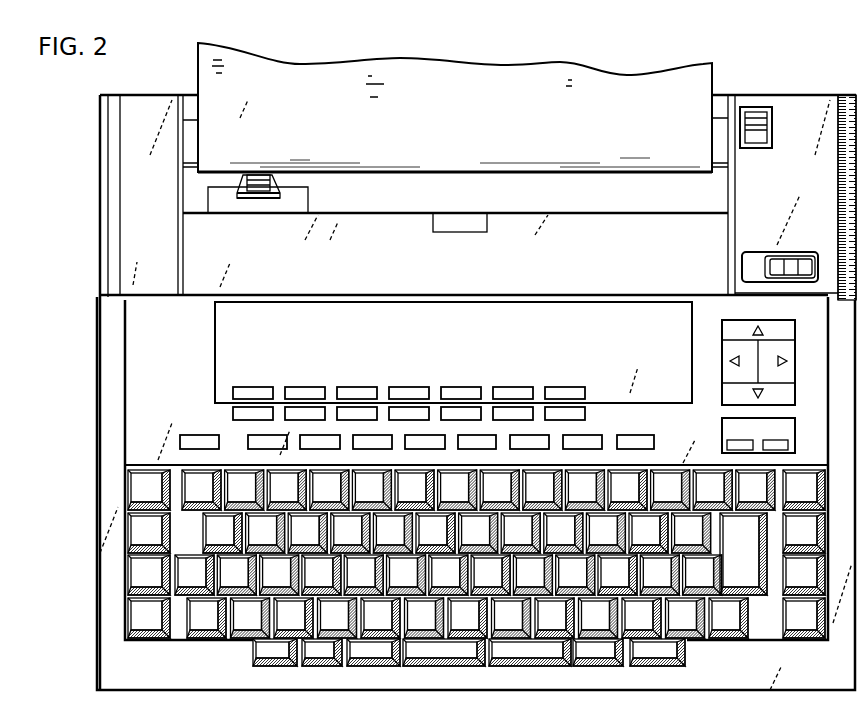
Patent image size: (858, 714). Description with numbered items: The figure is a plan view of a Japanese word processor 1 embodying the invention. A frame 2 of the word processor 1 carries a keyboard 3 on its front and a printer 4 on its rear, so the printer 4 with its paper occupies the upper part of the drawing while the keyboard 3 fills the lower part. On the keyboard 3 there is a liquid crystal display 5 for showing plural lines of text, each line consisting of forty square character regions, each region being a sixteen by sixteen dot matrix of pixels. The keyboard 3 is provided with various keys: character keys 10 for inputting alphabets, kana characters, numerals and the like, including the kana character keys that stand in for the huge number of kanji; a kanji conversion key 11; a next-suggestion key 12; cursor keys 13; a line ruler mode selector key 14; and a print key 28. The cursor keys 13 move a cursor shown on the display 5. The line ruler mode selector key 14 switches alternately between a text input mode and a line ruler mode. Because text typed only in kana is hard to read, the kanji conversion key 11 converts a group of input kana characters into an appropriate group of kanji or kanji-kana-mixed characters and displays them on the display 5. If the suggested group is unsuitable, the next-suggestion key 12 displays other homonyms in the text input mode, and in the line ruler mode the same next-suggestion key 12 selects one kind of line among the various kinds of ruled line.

The word processor 1 is at (88, 319).
The frame 2 is at (103, 418).
The keyboard 3 is at (462, 581).
The printer 4 is at (310, 196).
The liquid crystal display 5 is at (214, 358).
The character keys 10 is at (275, 567).
The kanji conversion key 11 is at (530, 657).
The next-suggestion key 12 is at (592, 656).
The cursor keys 13 is at (788, 348).
The line ruler mode selector key 14 is at (145, 617).
The print key 28 is at (517, 413).